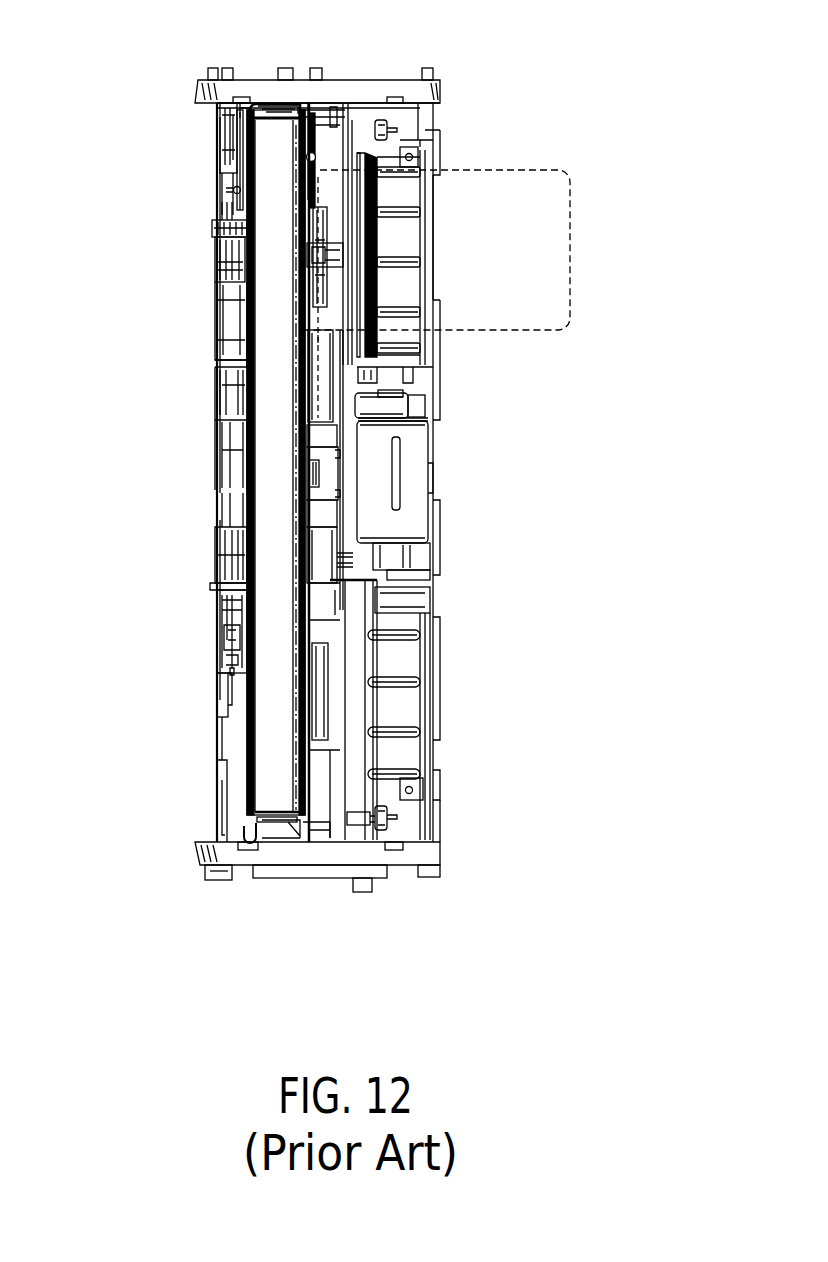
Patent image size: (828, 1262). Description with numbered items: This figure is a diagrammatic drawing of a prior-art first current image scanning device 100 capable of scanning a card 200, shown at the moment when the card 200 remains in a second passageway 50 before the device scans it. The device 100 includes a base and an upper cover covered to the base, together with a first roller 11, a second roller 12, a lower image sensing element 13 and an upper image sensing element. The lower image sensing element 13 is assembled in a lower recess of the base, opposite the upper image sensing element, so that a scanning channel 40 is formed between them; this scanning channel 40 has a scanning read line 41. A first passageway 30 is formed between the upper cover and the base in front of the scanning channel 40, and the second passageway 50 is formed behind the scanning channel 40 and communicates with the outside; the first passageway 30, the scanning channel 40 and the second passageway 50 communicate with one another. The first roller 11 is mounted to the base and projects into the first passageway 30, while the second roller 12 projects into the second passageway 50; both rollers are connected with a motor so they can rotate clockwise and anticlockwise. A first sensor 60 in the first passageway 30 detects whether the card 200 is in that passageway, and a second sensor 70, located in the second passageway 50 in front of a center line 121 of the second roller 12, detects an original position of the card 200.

The first current image scanning device 100 is at (237, 782).
The lower image sensing element 13 is at (267, 402).
The scanning read line 41 is at (290, 137).
The scanning channel 40 is at (270, 150).
The first sensor 60 is at (217, 190).
The first passageway 30 is at (217, 200).
The first roller 11 is at (213, 230).
The second sensor 70 is at (310, 147).
The center line 121 is at (313, 210).
The second roller 12 is at (340, 250).
The second passageway 50 is at (337, 220).
The card 200 is at (527, 205).